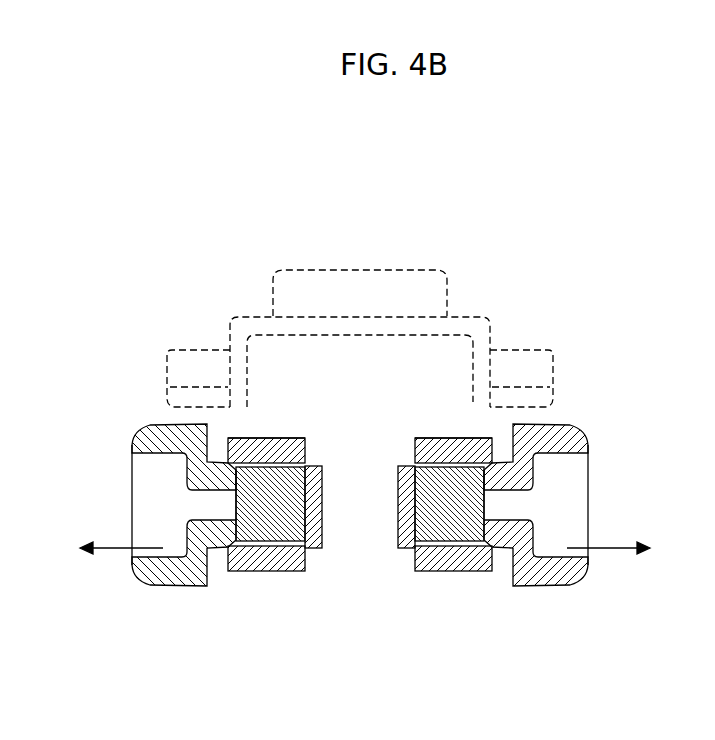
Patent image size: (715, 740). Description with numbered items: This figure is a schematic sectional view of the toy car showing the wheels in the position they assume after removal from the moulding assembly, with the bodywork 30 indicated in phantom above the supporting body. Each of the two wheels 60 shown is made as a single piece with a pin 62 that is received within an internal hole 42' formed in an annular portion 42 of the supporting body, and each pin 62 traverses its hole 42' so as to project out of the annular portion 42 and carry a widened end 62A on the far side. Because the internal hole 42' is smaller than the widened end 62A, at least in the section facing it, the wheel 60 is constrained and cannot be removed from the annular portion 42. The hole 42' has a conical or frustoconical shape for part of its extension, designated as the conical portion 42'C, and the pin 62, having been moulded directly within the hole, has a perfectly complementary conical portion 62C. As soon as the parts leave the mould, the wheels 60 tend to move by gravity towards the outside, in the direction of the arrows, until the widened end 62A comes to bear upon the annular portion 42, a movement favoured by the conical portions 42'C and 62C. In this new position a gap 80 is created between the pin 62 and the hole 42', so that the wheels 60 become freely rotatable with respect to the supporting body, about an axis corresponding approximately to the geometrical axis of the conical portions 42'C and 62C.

The bodywork 30 is at (358, 292).
The wheels 60 is at (140, 587).
The pins 62 is at (288, 437).
The widened ends 62A is at (390, 467).
The conical portions of the pins 62C is at (243, 571).
The annular portions 42 is at (360, 511).
The internal holes 42' is at (357, 509).
The conical portions of the holes 42'C is at (358, 474).
The gap 80 is at (268, 437).